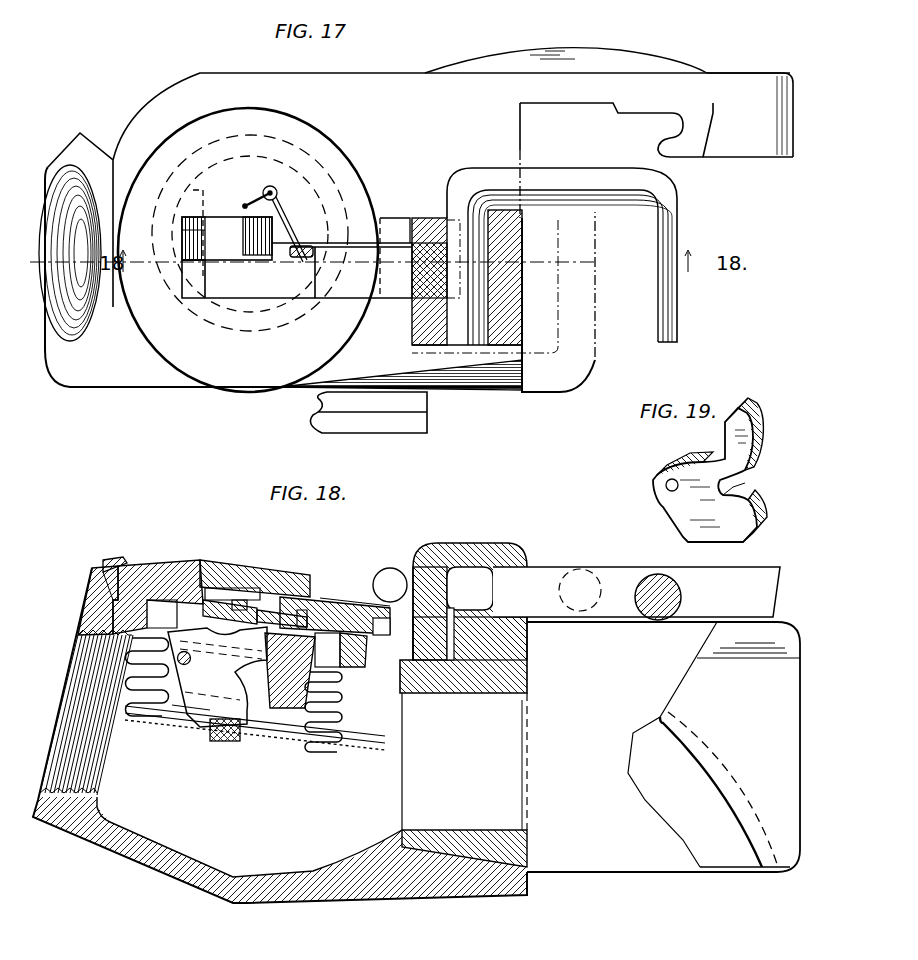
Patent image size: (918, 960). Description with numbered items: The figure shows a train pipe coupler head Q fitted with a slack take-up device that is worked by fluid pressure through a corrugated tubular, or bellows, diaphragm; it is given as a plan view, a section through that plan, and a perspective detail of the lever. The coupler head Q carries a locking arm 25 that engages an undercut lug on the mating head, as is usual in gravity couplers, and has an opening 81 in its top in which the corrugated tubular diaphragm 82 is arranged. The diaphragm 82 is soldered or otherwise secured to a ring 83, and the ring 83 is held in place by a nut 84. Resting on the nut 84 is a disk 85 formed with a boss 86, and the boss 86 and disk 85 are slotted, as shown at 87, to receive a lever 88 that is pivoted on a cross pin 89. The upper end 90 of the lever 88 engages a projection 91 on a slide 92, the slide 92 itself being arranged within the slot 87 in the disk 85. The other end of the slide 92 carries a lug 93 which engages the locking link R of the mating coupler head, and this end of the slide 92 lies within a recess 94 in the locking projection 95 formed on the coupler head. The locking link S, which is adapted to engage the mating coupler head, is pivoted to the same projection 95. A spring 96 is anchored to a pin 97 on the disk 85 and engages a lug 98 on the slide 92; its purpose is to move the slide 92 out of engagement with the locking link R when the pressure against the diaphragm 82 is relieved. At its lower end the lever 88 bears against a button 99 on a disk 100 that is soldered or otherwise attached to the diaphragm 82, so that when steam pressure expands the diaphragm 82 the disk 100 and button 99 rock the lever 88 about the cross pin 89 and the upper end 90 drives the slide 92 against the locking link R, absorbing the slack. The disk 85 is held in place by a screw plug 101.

In FIG. 17, the coupler head Q is at (383, 97).
In FIG. 18, the coupler head Q is at (295, 893).
In FIG. 17, the locking link R is at (543, 380).
In FIG. 18, the locking link R is at (392, 575).
In FIG. 17, the locking link S is at (603, 177).
In FIG. 18, the locking link S is at (613, 583).
In FIG. 17, the locking arm 25 is at (653, 88).
In FIG. 18, the locking arm 25 is at (645, 858).
In FIG. 17, the opening 81 is at (192, 130).
In FIG. 18, the opening 81 is at (153, 578).
In FIG. 18, the corrugated tubular diaphragm 82 is at (135, 660).
In FIG. 18, the ring 83 is at (100, 630).
In FIG. 18, the nut 84 is at (123, 560).
In FIG. 17, the disk 85 is at (197, 290).
In FIG. 18, the disk 85 is at (157, 617).
In FIG. 17, the boss 86 is at (248, 307).
In FIG. 18, the boss 86 is at (312, 745).
In FIG. 17, the slot 87 is at (197, 325).
In FIG. 18, the slot 87 is at (283, 710).
In FIG. 17, the lever 88 is at (182, 230).
In FIG. 18, the lever 88 is at (203, 666).
In FIG. 17, the cross pin 89 is at (193, 197).
In FIG. 18, the cross pin 89 is at (183, 667).
In FIG. 17, the upper end of lever 90 is at (256, 257).
In FIG. 19, the upper end of lever 90 is at (760, 422).
In FIG. 18, the upper end of lever 90 is at (258, 604).
In FIG. 17, the projection 91 is at (224, 228).
In FIG. 18, the projection 91 is at (222, 584).
In FIG. 17, the slide 92 is at (348, 287).
In FIG. 18, the slide 92 is at (370, 670).
In FIG. 17, the lug 93 is at (428, 245).
In FIG. 18, the lug 93 is at (432, 580).
In FIG. 18, the recess 94 is at (460, 548).
In FIG. 17, the locking projection 95 is at (508, 296).
In FIG. 18, the locking projection 95 is at (512, 638).
In FIG. 17, the spring 96 is at (294, 222).
In FIG. 18, the spring 96 is at (300, 608).
In FIG. 17, the pin 97 is at (272, 186).
In FIG. 18, the pin 97 is at (268, 590).
In FIG. 17, the lug 98 is at (310, 247).
In FIG. 18, the lug 98 is at (372, 606).
In FIG. 18, the button 99 is at (228, 742).
In FIG. 18, the disk 100 is at (196, 731).
In FIG. 18, the screw plug 101 is at (328, 597).